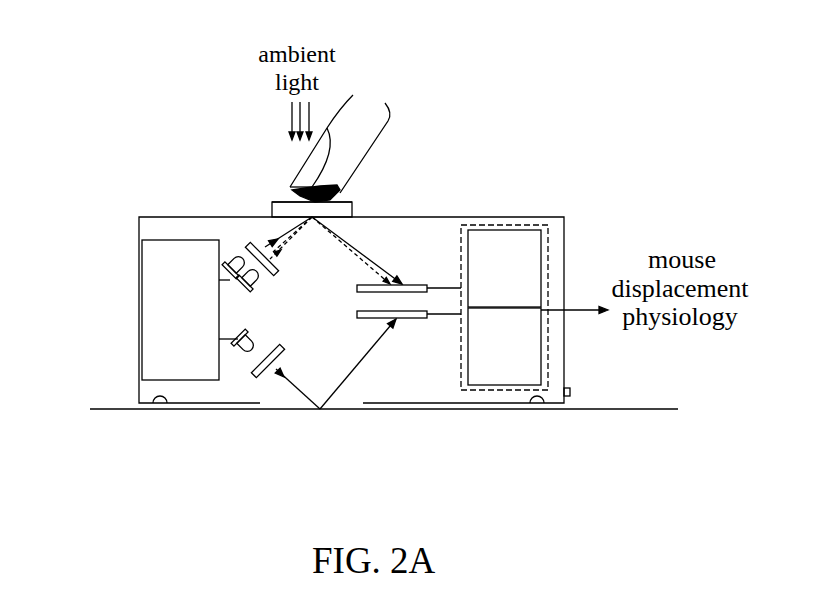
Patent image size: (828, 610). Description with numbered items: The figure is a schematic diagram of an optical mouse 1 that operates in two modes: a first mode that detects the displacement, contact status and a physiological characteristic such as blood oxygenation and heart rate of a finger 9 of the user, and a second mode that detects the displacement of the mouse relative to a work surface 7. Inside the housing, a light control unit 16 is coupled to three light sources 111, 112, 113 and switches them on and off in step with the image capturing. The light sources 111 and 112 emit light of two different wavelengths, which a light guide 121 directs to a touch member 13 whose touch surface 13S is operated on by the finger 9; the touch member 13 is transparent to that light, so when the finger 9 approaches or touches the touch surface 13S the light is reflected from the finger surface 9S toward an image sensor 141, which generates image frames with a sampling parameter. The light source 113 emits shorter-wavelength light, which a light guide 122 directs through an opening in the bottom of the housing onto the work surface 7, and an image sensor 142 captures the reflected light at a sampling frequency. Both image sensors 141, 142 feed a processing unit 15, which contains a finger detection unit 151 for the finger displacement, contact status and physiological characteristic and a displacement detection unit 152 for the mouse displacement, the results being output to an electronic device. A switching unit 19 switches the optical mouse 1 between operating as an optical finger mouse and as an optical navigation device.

The optical mouse 1 is at (591, 191).
The work surface 7 is at (650, 409).
The finger 9 is at (353, 95).
The finger surface 9S is at (293, 192).
The touch member 13 is at (218, 217).
The touch surface 13S is at (343, 201).
The processing unit 15 is at (542, 307).
The light control unit 16 is at (142, 307).
The switching unit 19 is at (570, 392).
The light source 111 is at (232, 260).
The light source 112 is at (258, 288).
The light source 113 is at (240, 354).
The light guide 121 is at (277, 271).
The light guide 122 is at (256, 376).
The image sensor 141 is at (420, 283).
The image sensor 142 is at (418, 320).
The finger detection unit 151 is at (541, 243).
The displacement detection unit 152 is at (541, 353).